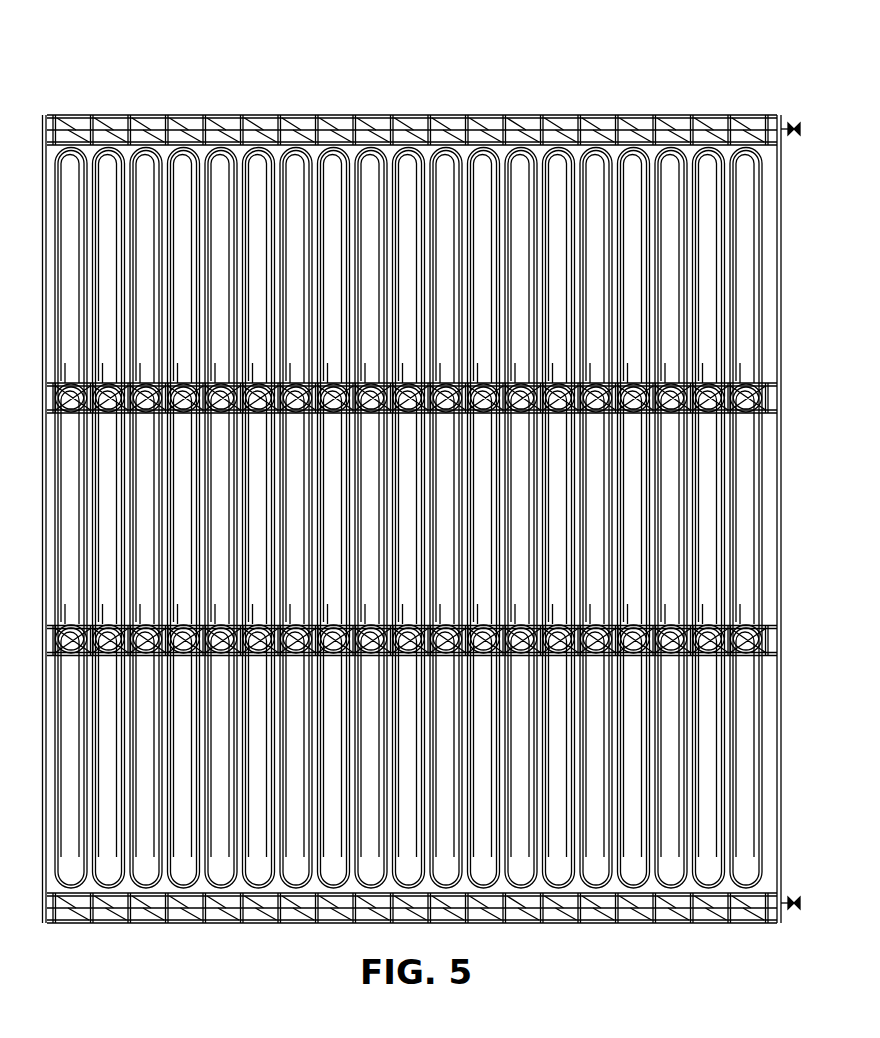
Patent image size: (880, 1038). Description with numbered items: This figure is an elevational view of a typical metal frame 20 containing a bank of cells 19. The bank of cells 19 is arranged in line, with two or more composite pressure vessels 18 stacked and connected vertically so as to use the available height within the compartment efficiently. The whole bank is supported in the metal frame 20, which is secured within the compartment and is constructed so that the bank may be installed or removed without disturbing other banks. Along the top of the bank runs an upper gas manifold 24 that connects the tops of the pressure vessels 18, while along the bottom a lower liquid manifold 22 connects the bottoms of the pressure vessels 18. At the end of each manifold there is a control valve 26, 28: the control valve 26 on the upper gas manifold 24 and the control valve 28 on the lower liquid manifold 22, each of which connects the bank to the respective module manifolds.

The pressure vessels 18 is at (422, 467).
The bank of cells 19 is at (517, 86).
The metal frame 20 is at (66, 182).
The lower liquid manifold 22 is at (548, 922).
The upper gas manifold 24 is at (383, 129).
The control valve 26 is at (794, 123).
The control valve 28 is at (794, 910).